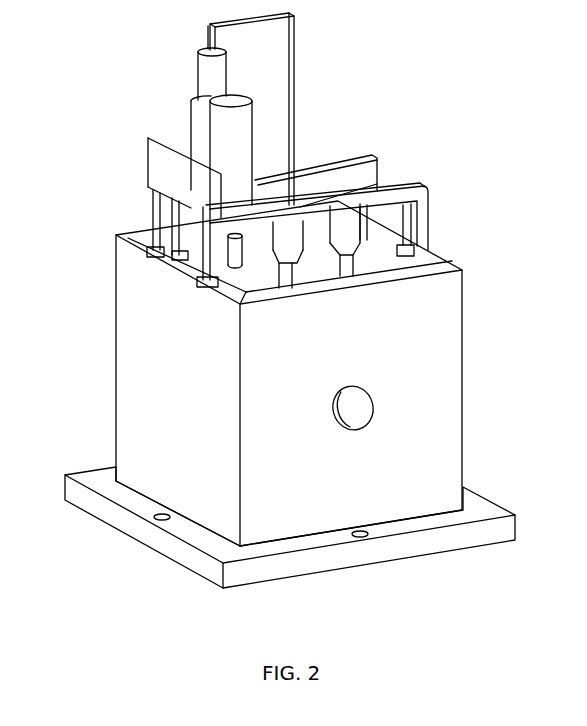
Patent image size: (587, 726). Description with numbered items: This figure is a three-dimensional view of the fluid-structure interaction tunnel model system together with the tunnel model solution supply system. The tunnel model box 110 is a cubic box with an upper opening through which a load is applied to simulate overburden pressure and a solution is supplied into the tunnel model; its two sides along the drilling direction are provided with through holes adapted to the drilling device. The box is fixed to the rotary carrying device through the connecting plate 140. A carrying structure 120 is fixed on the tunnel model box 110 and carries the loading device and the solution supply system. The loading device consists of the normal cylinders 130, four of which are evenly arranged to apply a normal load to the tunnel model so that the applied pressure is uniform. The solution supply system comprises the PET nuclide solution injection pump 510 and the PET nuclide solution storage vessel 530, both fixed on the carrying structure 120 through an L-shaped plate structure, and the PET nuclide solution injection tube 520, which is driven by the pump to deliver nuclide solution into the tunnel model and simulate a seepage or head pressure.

The tunnel model box 110 is at (390, 467).
The carrying structure 120 is at (322, 202).
The normal cylinders 130 is at (297, 240).
The connecting plate 140 is at (391, 553).
The PET nuclide solution injection pump 510 is at (210, 64).
The PET nuclide solution injection tube 520 is at (288, 78).
The PET nuclide solution storage vessel 530 is at (243, 190).